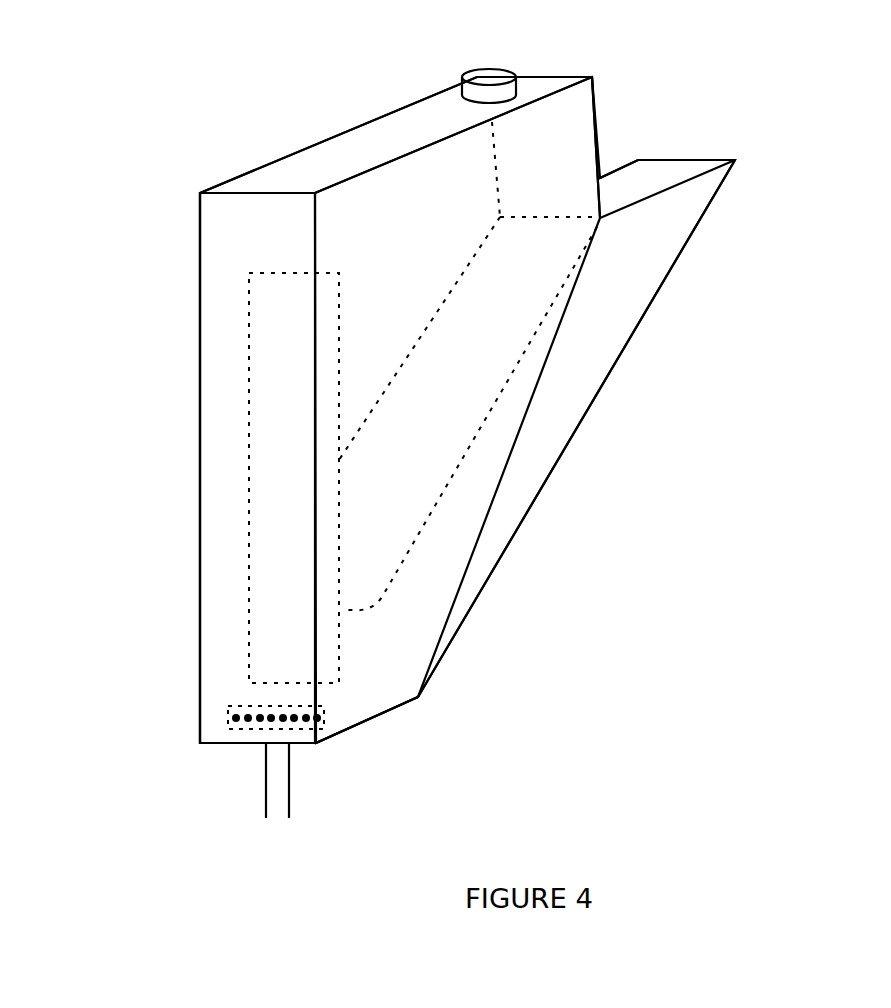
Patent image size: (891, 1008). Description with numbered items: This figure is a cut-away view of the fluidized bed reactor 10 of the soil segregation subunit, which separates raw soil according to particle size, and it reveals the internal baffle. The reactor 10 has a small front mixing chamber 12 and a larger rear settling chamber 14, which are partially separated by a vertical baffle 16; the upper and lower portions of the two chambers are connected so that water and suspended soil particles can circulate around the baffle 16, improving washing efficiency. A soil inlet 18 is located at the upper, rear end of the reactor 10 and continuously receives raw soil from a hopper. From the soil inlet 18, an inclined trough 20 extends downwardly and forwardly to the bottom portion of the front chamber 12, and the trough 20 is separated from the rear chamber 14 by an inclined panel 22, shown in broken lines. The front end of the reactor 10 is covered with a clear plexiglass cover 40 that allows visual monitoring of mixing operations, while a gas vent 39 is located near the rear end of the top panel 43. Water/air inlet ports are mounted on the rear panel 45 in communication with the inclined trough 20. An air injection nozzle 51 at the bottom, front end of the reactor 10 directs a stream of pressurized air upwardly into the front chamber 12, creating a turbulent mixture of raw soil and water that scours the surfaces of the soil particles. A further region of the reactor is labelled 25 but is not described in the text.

The fluidized bed reactor 10 is at (640, 432).
The front mixing chamber 12 is at (220, 405).
The rear settling chamber 14 is at (413, 286).
The vertical baffle 16 is at (308, 363).
The soil inlet 18 is at (655, 186).
The inclined trough 20 is at (505, 473).
The inclined panel 22 is at (505, 323).
The upper rear portion 25 is at (533, 155).
The gas vent 39 is at (487, 77).
The clear plexiglass cover 40 is at (217, 507).
The top panel 43 is at (365, 155).
The rear panel 45 is at (618, 363).
The air injection nozzle 51 is at (298, 728).